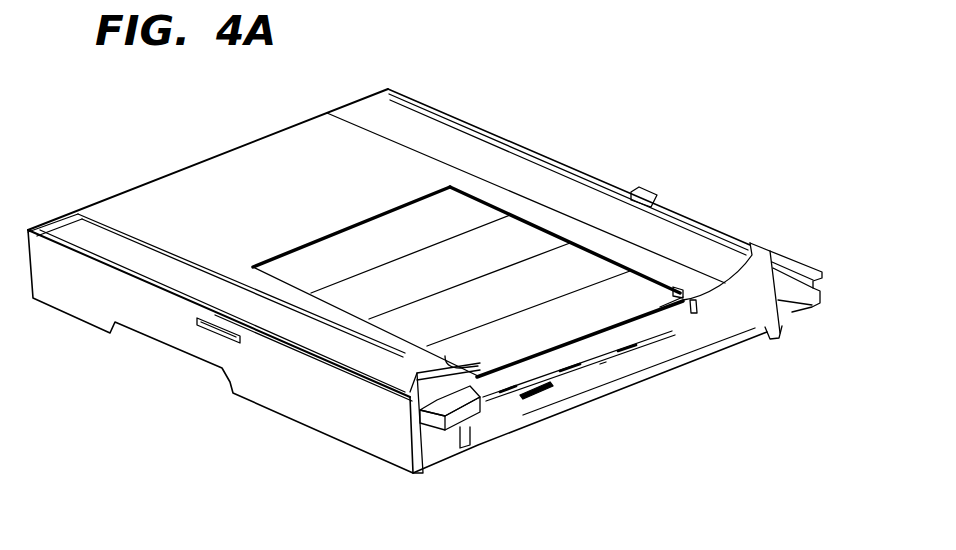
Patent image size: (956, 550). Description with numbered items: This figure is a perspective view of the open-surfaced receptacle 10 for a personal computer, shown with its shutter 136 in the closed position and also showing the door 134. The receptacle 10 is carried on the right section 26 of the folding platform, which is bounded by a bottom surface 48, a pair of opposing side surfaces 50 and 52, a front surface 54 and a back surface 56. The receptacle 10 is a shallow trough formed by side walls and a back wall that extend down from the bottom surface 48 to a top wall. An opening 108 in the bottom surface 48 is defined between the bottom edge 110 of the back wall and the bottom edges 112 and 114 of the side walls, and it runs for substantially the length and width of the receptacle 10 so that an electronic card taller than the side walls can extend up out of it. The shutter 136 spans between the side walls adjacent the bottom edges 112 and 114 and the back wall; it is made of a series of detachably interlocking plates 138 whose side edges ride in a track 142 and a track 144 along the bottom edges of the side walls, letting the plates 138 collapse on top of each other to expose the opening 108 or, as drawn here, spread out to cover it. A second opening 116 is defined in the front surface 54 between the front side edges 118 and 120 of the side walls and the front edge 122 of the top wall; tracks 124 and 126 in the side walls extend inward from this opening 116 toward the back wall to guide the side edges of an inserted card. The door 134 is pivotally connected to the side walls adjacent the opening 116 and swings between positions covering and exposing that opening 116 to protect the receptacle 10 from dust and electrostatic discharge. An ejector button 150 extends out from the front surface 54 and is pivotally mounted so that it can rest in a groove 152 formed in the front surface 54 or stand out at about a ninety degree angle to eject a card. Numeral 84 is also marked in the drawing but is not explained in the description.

The right section 26 is at (679, 121).
The back surface 56 is at (155, 180).
The side surface 50 is at (107, 298).
The bottom surface 48 is at (223, 170).
The side surface 52 is at (484, 130).
The bottom edge 112 is at (322, 311).
The shutter 136 is at (410, 324).
The opening 108 is at (424, 231).
The bottom edge 114 is at (530, 219).
The bottom edge 110 is at (293, 247).
The plates 138 is at (361, 256).
The track 144 is at (445, 356).
The opening 116 is at (556, 354).
The track 142 is at (646, 315).
The door 134 is at (656, 322).
The front side edge 118 is at (700, 300).
The front surface 54 is at (735, 306).
The hook 84 is at (780, 338).
The open-surfaced receptacle 10 is at (676, 326).
The track 124 is at (686, 318).
The front edge 122 is at (622, 342).
The front side edge 120 is at (516, 398).
The track 126 is at (481, 398).
The groove 152 is at (438, 446).
The ejector button 150 is at (478, 372).